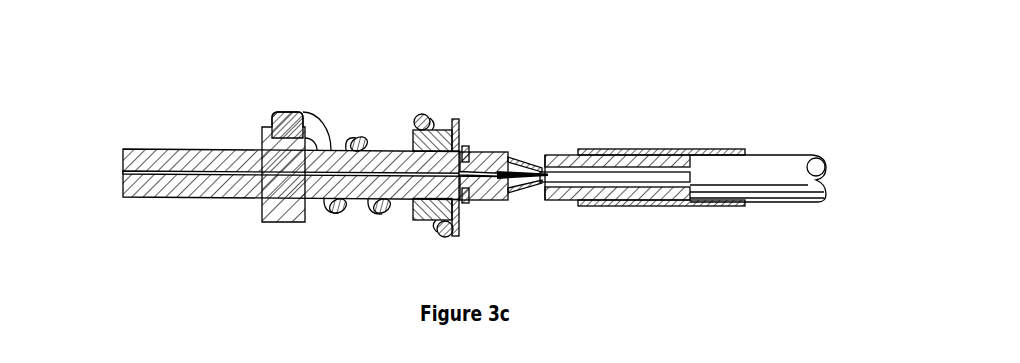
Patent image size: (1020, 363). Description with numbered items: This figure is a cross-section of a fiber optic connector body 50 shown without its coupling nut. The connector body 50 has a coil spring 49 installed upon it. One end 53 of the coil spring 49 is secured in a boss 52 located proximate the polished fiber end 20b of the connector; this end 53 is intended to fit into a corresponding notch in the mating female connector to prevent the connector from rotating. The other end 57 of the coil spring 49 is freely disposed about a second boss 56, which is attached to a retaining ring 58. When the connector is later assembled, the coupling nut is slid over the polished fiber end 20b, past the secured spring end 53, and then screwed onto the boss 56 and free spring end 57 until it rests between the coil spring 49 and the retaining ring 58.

The connector body 50 is at (523, 50).
The polished fiber end 20b is at (122, 178).
The boss 52 is at (284, 224).
The spring end 53 is at (291, 112).
The coil spring 49 is at (352, 142).
The boss 56 is at (413, 220).
The spring end 57 is at (430, 115).
The retaining ring 58 is at (458, 216).